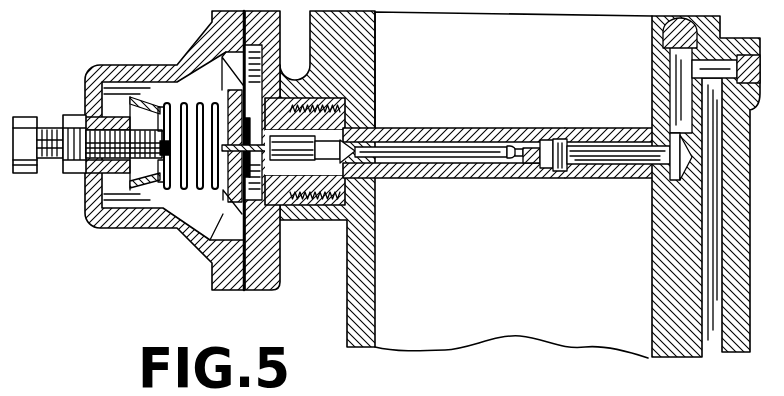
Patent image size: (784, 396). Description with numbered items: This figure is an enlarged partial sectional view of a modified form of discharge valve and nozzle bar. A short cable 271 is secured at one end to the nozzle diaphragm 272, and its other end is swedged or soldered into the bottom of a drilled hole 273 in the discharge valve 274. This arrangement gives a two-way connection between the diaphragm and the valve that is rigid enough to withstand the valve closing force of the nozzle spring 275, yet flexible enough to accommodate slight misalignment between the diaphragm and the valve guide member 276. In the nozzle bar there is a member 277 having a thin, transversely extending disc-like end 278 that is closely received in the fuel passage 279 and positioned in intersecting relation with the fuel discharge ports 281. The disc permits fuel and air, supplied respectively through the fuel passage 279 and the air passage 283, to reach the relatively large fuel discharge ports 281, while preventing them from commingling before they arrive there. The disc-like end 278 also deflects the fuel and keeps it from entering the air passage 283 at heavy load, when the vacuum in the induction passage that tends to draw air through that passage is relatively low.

The short cable 271 is at (281, 230).
The nozzle diaphragm 272 is at (190, 238).
The drilled hole 273 is at (377, 89).
The discharge valve 274 is at (380, 124).
The nozzle spring 275 is at (158, 192).
The valve guide member 276 is at (370, 228).
The member 277 is at (603, 138).
The disc-like end 278 is at (520, 146).
The fuel passage 279 is at (443, 160).
The fuel discharge ports 281 is at (486, 170).
The air passage 283 is at (622, 160).